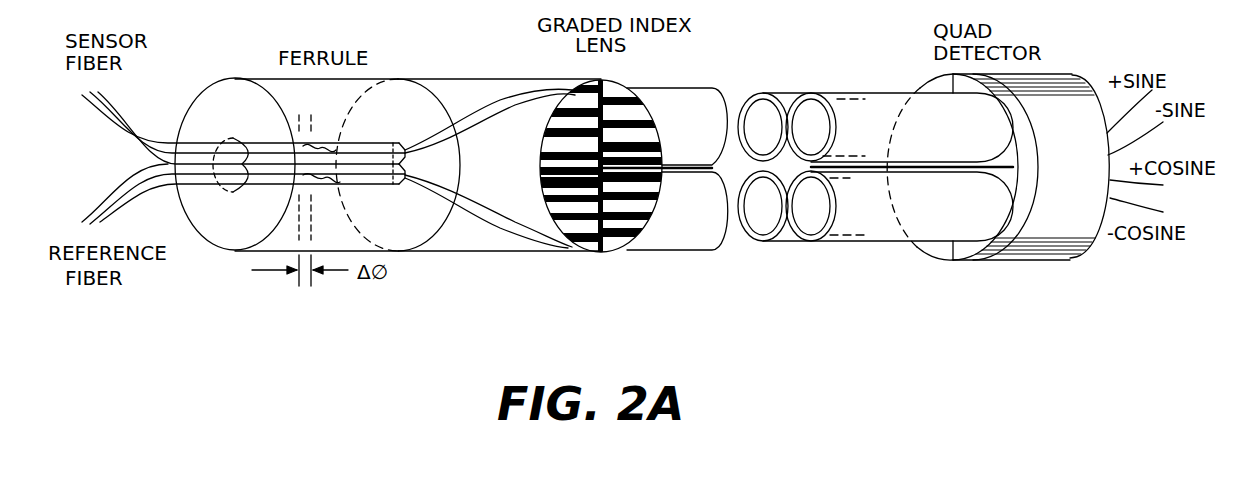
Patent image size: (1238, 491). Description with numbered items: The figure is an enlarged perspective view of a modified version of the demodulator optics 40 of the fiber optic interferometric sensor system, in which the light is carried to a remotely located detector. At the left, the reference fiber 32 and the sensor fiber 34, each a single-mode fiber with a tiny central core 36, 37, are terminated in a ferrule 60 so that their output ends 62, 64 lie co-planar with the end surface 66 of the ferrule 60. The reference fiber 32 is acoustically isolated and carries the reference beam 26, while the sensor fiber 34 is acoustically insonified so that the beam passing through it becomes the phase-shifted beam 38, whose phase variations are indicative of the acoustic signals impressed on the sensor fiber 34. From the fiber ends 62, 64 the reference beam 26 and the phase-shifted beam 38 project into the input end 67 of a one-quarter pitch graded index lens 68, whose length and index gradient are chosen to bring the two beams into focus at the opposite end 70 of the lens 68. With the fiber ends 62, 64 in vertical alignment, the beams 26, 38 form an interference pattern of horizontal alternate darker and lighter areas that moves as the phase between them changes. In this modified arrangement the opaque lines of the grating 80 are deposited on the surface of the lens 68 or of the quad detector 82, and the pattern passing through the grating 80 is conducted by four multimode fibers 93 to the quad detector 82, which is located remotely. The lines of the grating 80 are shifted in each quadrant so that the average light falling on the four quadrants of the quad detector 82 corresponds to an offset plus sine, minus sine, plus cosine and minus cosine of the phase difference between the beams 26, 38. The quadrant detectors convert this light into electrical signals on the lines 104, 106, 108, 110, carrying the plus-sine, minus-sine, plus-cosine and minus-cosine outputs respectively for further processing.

The reference beam 26 is at (327, 180).
The reference fiber 32 is at (104, 185).
The sensor fiber 34 is at (124, 122).
The central core 36 is at (115, 195).
The central core 37 is at (100, 133).
The phase-shifted beam 38 is at (327, 146).
The demodulator optics 40 is at (387, 44).
The ferrule 60 is at (243, 78).
The output end 62 is at (413, 178).
The output end 64 is at (412, 140).
The end surface 66 is at (436, 232).
The input end 67 is at (410, 248).
The one-quarter pitch graded index lens 68 is at (434, 79).
The opposite end 70 is at (631, 233).
The grating 80 is at (645, 227).
The quad detector 82 is at (1074, 246).
The multimode fibers 93 is at (850, 91).
The line 104 is at (1141, 101).
The line 106 is at (1163, 124).
The line 108 is at (1163, 185).
The line 110 is at (1163, 210).